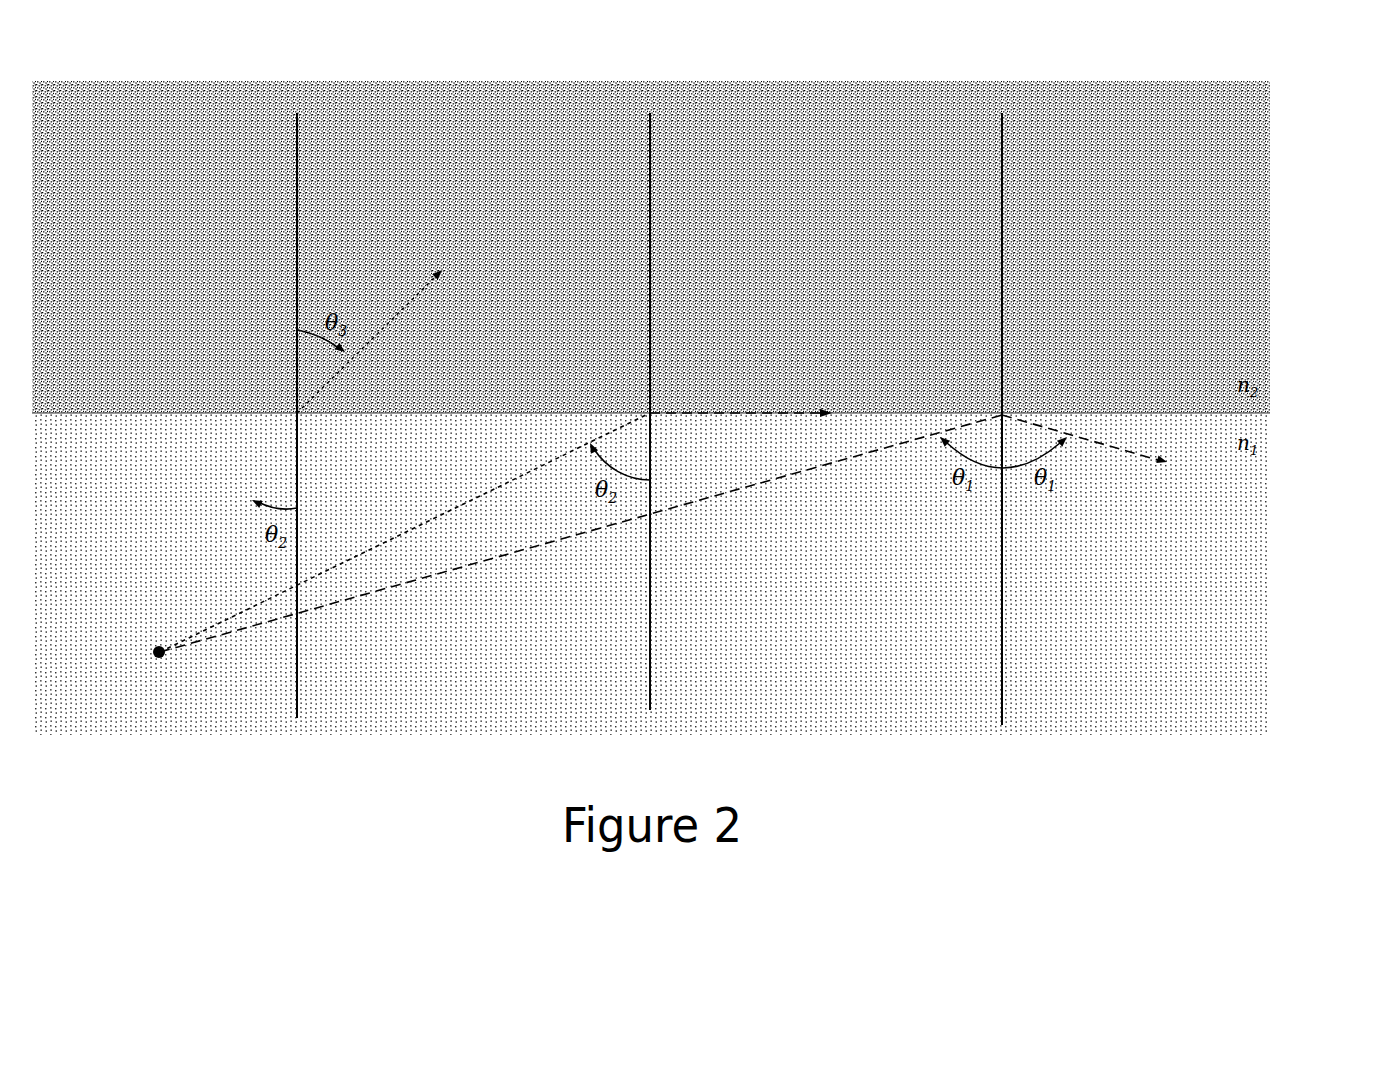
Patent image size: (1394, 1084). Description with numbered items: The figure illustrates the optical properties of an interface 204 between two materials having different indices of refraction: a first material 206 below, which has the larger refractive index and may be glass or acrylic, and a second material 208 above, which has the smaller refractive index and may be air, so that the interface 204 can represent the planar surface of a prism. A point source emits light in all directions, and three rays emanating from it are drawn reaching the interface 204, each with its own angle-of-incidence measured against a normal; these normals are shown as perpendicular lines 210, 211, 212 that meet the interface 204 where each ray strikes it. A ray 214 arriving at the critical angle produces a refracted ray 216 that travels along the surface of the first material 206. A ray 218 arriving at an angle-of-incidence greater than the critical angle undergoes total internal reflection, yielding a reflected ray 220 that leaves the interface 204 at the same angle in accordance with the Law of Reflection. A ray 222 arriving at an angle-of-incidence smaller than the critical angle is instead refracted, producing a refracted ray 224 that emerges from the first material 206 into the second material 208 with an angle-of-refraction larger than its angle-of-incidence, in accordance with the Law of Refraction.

The interface 204 is at (1272, 415).
The first material 206 is at (1272, 583).
The second material 208 is at (1272, 255).
The perpendicular line 210 is at (298, 112).
The perpendicular line 211 is at (650, 112).
The perpendicular line 212 is at (1002, 112).
The ray 214 is at (480, 497).
The refracted ray 216 is at (720, 415).
The ray 218 is at (532, 548).
The reflected ray 220 is at (1117, 450).
The ray 222 is at (228, 530).
The refracted ray 224 is at (398, 318).